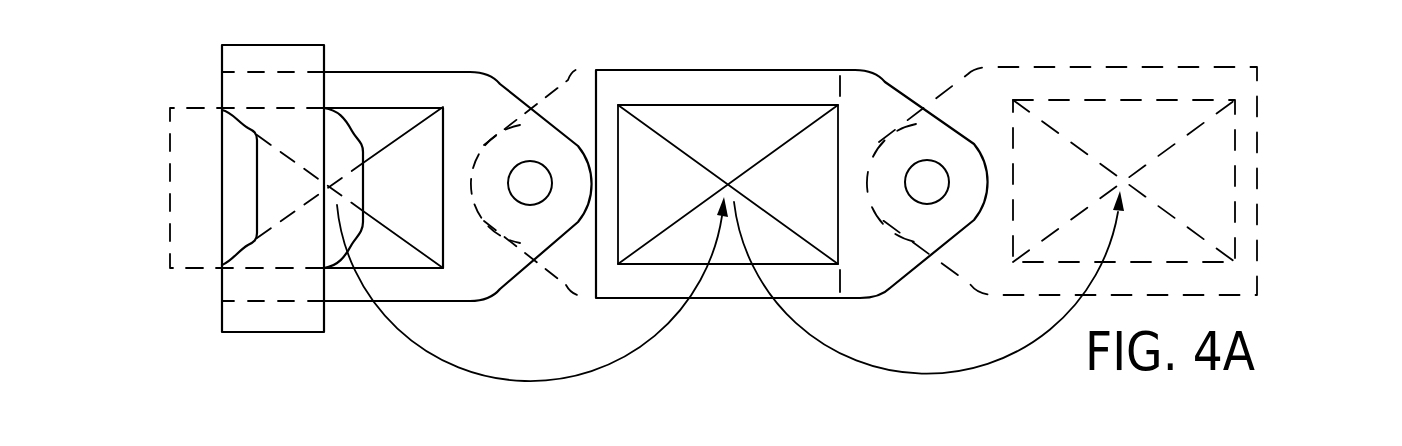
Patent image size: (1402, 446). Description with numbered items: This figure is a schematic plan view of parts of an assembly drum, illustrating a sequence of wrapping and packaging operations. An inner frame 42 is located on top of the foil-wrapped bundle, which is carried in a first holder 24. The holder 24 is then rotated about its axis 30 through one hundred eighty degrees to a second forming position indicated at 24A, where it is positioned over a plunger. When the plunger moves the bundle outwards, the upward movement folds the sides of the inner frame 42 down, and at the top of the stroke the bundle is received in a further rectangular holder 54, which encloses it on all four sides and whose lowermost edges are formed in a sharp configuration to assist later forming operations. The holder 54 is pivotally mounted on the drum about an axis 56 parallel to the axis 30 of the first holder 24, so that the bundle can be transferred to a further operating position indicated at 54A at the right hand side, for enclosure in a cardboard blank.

The holder 24 is at (499, 90).
The second forming position 24A is at (572, 60).
The axis 30 is at (538, 196).
The inner frame 42 is at (330, 128).
The further rectangular holder 54 is at (817, 298).
The further operating position 54A is at (1240, 64).
The axis 56 is at (913, 165).